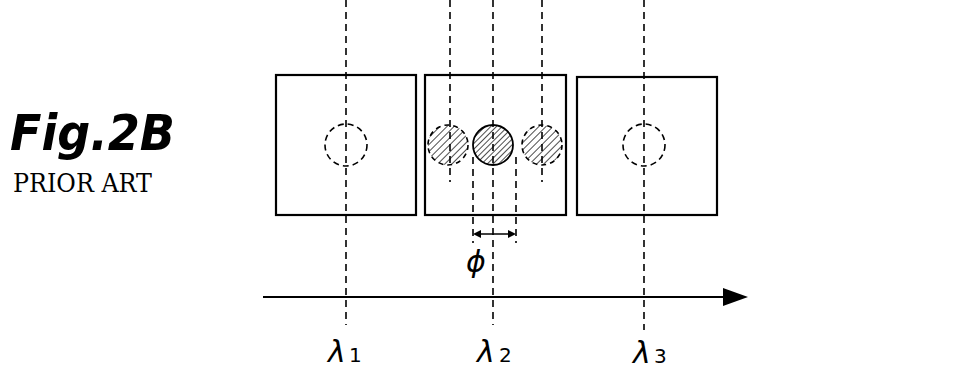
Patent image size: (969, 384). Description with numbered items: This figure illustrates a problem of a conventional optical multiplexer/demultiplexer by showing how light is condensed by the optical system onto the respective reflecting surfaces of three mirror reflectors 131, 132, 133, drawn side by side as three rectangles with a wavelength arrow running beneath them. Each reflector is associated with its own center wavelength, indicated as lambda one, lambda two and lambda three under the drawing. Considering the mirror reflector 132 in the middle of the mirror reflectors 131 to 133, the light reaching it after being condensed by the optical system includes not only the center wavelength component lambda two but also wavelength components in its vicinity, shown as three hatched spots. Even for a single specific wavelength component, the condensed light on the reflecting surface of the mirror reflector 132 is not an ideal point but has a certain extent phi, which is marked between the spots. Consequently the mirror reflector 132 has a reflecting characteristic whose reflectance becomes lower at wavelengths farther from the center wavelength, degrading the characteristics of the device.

The mirror reflector 131 is at (276, 93).
The mirror reflector 132 is at (553, 75).
The mirror reflector 133 is at (708, 131).